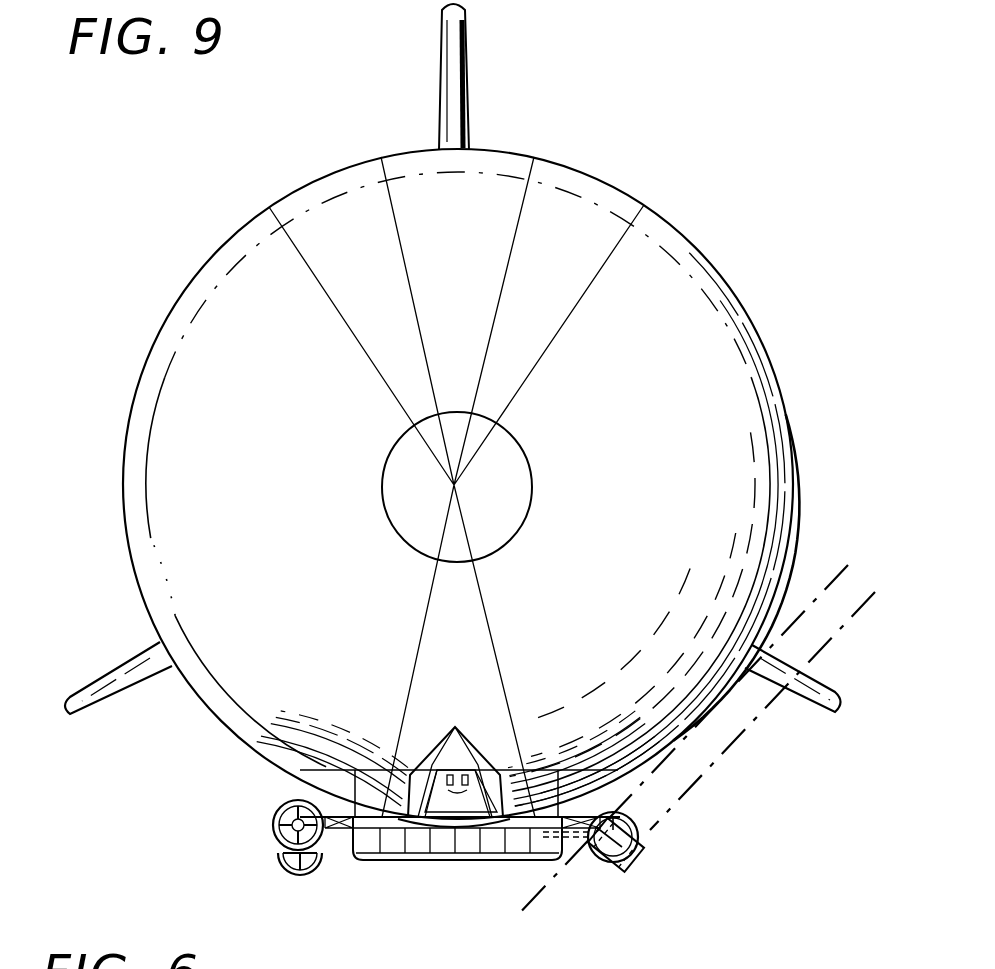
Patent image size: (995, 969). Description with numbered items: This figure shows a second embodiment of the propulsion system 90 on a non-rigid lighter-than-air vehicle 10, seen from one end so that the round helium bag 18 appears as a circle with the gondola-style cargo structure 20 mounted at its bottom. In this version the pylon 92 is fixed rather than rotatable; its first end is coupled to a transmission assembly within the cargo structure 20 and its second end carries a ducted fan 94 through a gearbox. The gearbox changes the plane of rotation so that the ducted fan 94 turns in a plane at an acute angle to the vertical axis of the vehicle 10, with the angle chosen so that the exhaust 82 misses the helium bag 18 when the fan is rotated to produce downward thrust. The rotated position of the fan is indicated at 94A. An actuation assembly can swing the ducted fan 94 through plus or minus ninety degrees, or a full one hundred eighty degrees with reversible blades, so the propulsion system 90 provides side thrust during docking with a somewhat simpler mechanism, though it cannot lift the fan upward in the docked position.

The lighter-than-air vehicle 10 is at (232, 204).
The helium bag 18 is at (735, 293).
The cargo structure 20 is at (465, 862).
The exhaust 82 is at (775, 700).
The propulsion system 90 is at (330, 870).
The fixed pylon 92 is at (504, 928).
The ducted fan 94 is at (290, 806).
The roller wheel 94A is at (302, 872).